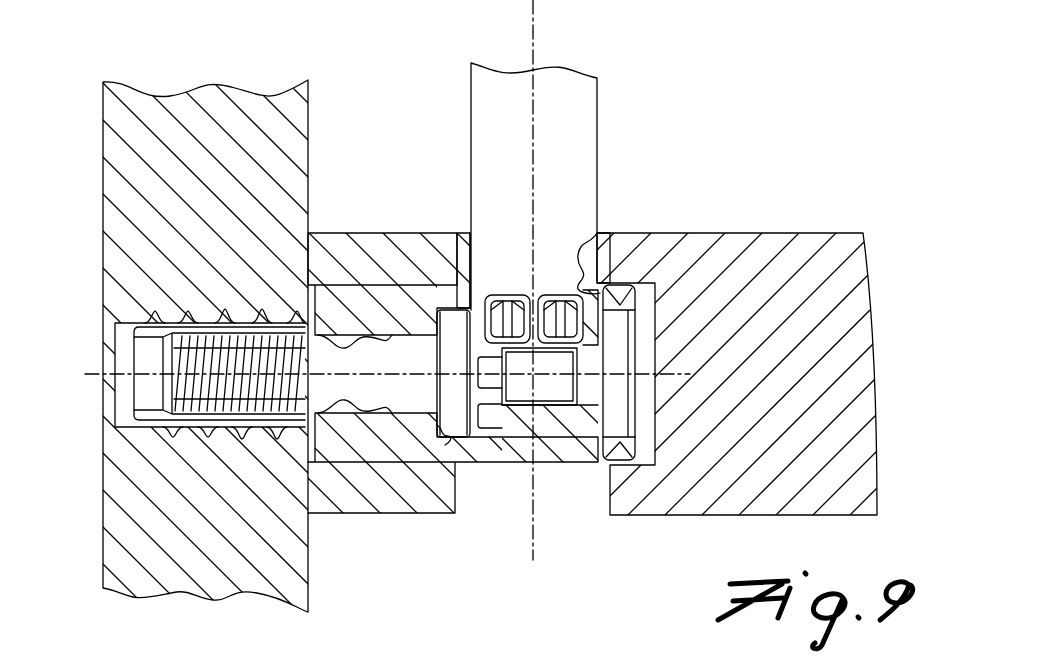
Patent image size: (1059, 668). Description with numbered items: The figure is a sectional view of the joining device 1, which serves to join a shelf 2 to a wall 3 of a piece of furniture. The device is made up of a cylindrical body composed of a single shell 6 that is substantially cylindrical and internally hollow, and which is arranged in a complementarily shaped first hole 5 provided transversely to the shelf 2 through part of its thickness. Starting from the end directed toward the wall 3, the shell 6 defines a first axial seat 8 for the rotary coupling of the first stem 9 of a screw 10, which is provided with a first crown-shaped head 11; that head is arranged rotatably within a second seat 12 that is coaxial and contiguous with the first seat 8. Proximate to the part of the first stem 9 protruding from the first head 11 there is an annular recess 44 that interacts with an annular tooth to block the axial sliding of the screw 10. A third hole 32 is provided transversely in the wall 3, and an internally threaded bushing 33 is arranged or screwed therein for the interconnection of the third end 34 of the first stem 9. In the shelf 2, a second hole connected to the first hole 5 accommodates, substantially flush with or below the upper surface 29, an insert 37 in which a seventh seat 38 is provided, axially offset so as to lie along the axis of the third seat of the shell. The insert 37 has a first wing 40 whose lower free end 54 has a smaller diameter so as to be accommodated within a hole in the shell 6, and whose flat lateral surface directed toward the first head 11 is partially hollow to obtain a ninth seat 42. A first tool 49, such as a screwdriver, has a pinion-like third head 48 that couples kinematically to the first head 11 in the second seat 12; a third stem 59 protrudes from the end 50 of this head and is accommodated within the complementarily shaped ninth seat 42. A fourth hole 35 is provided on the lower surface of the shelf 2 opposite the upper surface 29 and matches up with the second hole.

The joining device 1 is at (722, 128).
The shelf 2 is at (835, 285).
The wall 3 is at (145, 188).
The first hole 5 is at (643, 315).
The single shell 6 is at (372, 295).
The first axial seat 8 is at (348, 333).
The first stem 9 is at (335, 402).
The screw 10 is at (367, 400).
The first crown-shaped head 11 is at (447, 303).
The second seat 12 is at (445, 438).
The upper surface 29 is at (840, 230).
The third hole 32 is at (125, 395).
The internally threaded bushing 33 is at (155, 418).
The third end 34 is at (193, 357).
The fourth hole 35 is at (500, 490).
The insert 37 is at (463, 240).
The seventh seat 38 is at (580, 238).
The first wing 40 is at (588, 364).
The ninth seat 42 is at (575, 402).
The annular recess 44 is at (420, 335).
The third head 48 is at (600, 300).
The first tool 49 is at (601, 106).
The end 50 is at (540, 442).
The lower free end 54 is at (518, 432).
The third stem 59 is at (583, 432).